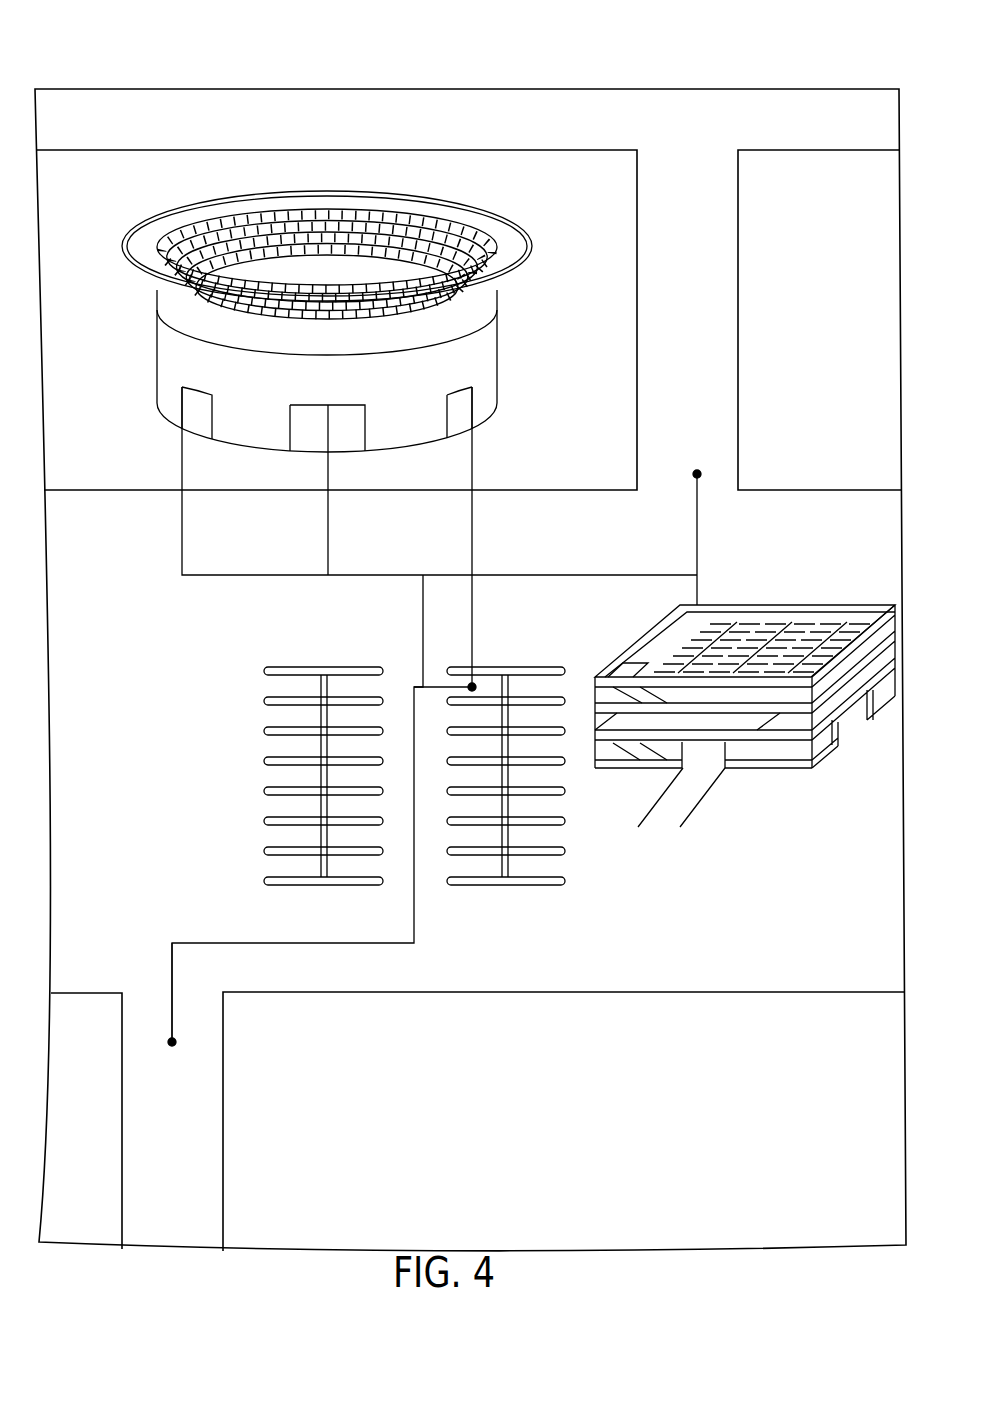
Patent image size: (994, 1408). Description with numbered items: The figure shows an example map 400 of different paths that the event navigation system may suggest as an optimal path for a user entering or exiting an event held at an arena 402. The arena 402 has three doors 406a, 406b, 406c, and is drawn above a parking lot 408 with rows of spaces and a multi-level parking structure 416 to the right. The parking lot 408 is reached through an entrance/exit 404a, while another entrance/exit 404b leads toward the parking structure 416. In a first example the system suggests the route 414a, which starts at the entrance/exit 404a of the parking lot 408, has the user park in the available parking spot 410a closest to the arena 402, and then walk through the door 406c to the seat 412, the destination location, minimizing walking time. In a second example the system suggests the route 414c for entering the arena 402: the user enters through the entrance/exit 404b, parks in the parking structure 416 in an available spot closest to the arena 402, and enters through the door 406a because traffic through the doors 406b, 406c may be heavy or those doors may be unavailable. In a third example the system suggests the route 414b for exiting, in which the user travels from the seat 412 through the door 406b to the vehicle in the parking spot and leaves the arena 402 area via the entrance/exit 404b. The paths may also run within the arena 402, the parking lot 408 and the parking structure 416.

The venue environment map 400 is at (100, 87).
The arena 402 is at (336, 320).
The entrance/exit of the parking lot 404a is at (172, 1042).
The entrance/exit 404b is at (697, 474).
The door 406a is at (157, 394).
The door 406b is at (367, 420).
The door 406c is at (500, 397).
The parking lot 408 is at (261, 888).
The parking spot 410a is at (473, 687).
The seat 412 is at (487, 245).
The route 414a is at (472, 548).
The route 414b is at (328, 548).
The route 414c is at (182, 548).
The parking structure 416 is at (780, 600).